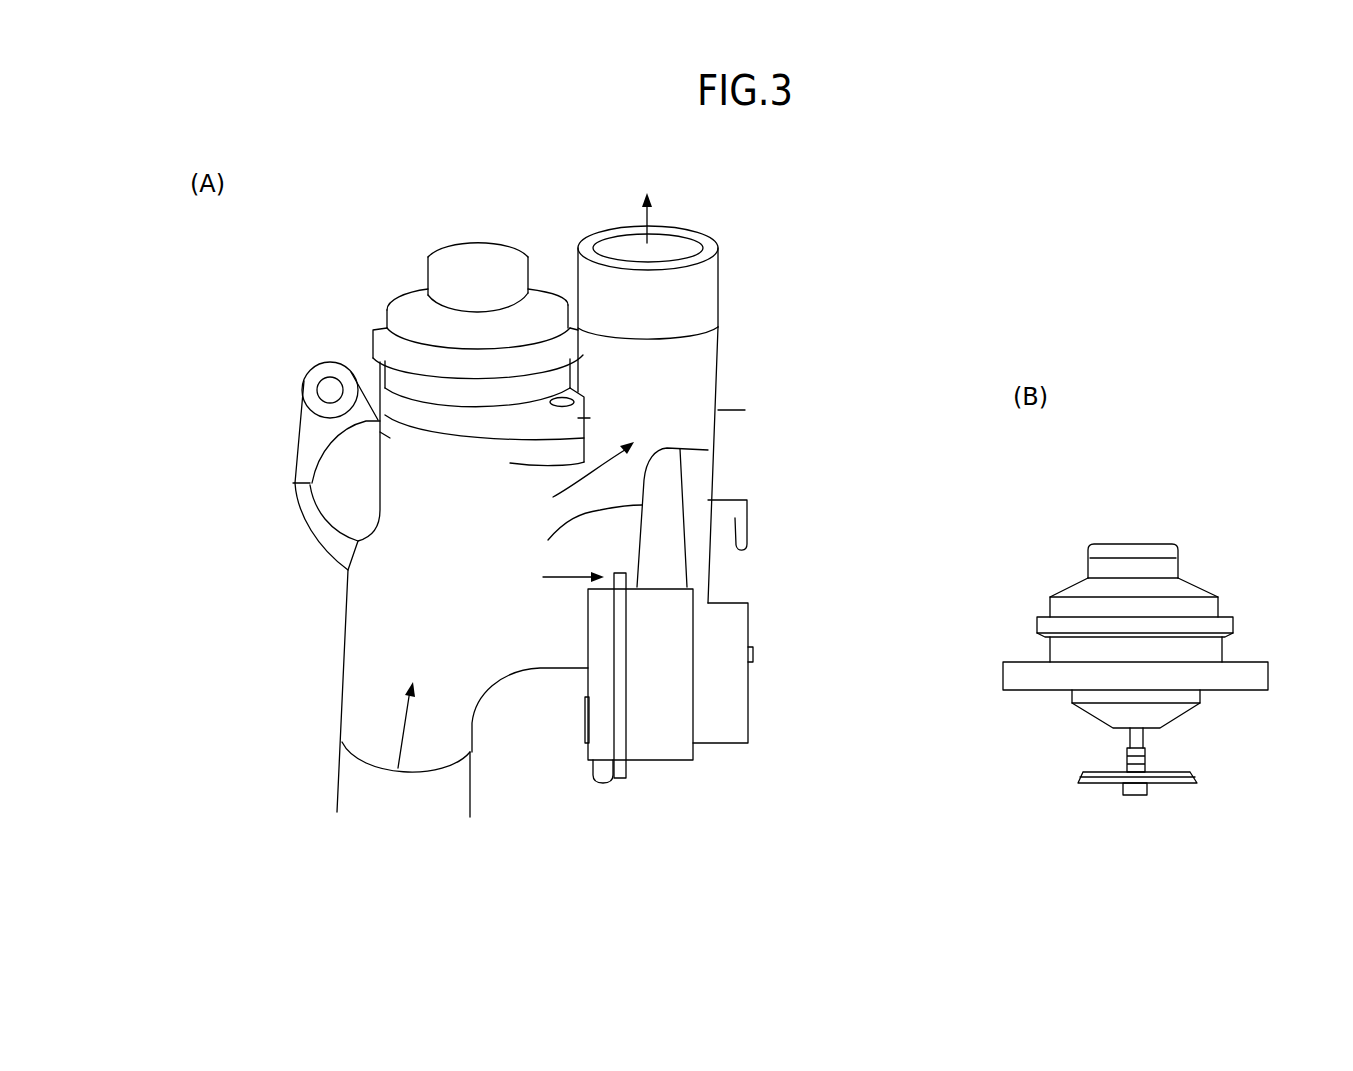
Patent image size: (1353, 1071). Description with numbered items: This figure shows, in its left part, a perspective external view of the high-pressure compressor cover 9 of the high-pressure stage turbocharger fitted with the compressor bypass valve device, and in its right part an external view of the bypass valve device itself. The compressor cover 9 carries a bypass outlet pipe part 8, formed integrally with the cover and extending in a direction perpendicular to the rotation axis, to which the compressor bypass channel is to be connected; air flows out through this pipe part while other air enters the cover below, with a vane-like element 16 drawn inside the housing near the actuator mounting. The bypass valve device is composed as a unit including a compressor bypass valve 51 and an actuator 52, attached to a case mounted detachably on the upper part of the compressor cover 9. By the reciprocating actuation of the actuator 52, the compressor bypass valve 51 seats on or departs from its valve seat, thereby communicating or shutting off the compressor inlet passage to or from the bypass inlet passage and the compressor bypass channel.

The bypass outlet pipe part 8 is at (686, 297).
The high-pressure compressor cover 9 is at (372, 570).
The vane / flap 16 is at (724, 475).
The compressor bypass valve 51 is at (1072, 787).
The actuator 52 is at (1082, 586).